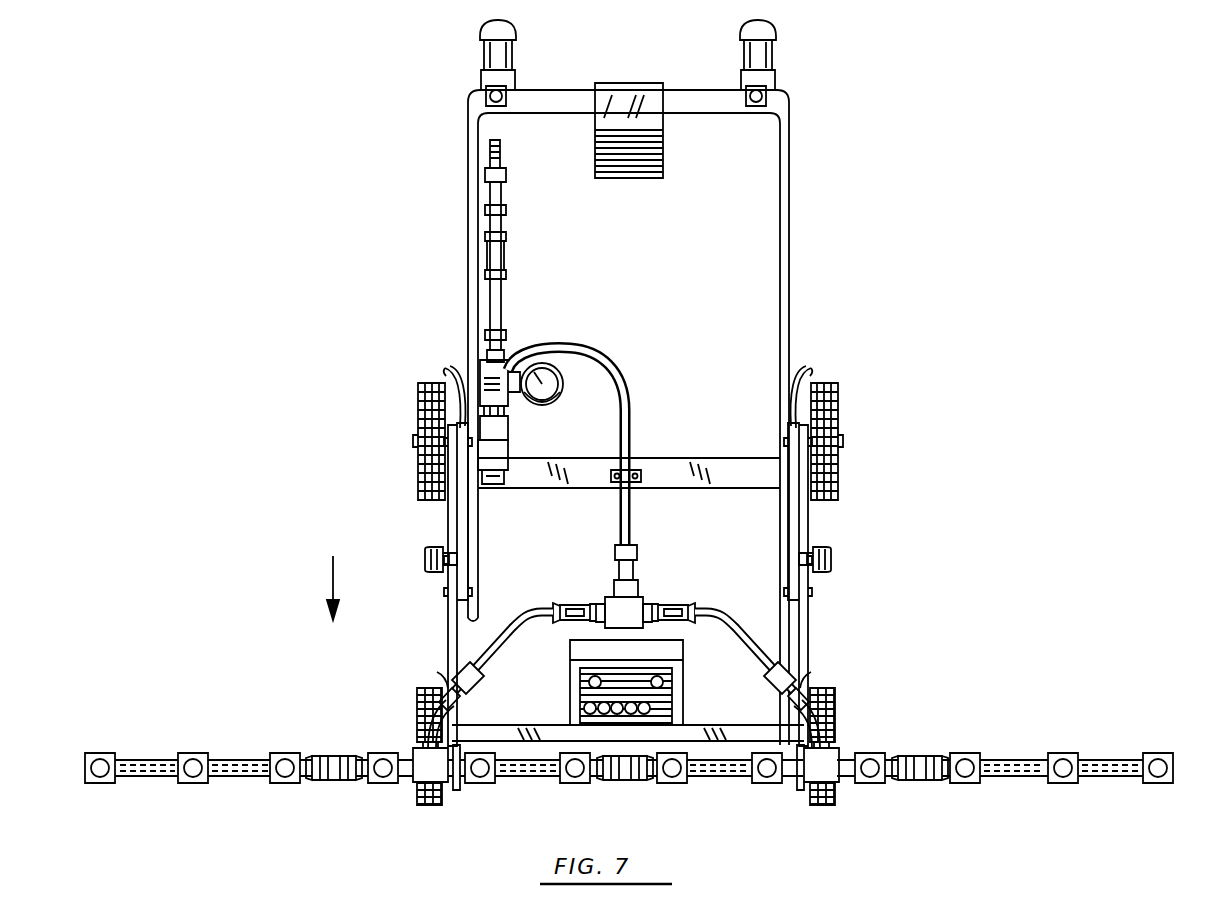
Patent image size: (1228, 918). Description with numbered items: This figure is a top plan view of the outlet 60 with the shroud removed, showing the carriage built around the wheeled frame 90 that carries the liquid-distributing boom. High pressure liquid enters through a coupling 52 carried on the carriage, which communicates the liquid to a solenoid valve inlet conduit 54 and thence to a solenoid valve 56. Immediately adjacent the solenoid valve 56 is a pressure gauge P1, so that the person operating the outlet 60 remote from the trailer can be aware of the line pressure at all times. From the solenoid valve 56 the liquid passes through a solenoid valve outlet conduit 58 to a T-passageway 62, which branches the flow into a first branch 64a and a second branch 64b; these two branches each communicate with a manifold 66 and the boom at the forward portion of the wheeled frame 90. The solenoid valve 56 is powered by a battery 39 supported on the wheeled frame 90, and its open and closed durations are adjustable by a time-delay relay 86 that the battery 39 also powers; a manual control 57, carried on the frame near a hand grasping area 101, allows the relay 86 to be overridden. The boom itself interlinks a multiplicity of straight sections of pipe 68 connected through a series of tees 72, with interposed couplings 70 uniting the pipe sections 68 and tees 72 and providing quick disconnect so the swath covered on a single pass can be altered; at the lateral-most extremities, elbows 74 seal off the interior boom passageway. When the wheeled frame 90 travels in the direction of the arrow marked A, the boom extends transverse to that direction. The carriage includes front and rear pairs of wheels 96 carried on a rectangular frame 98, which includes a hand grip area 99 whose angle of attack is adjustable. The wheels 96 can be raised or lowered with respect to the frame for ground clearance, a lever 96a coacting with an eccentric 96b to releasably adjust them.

The outlet 60 is at (908, 294).
The hand grip area 99 is at (786, 243).
The hand grasping area 101 is at (506, 62).
The manual control 57 is at (482, 94).
The time-delay relay 86 is at (628, 100).
The coupling 52 is at (503, 156).
The solenoid valve inlet conduit 54 is at (500, 300).
The solenoid valve 56 is at (505, 365).
The pressure gauge P1 is at (548, 404).
The solenoid valve outlet conduit 58 is at (600, 372).
The rectangular frame 98 is at (700, 460).
The T-passageway 62 is at (635, 611).
The first branch 64a is at (512, 628).
The second branch 64b is at (738, 626).
The battery 39 is at (678, 689).
The wheels 96 is at (836, 416).
The lever 96a is at (442, 370).
The eccentric 96b is at (456, 412).
The wheeled frame 90 is at (410, 512).
The straight sections of pipe 68 is at (238, 760).
The tees 72 is at (276, 784).
The elbows 74 is at (96, 752).
The couplings 70 is at (326, 754).
The manifold 66 is at (414, 780).